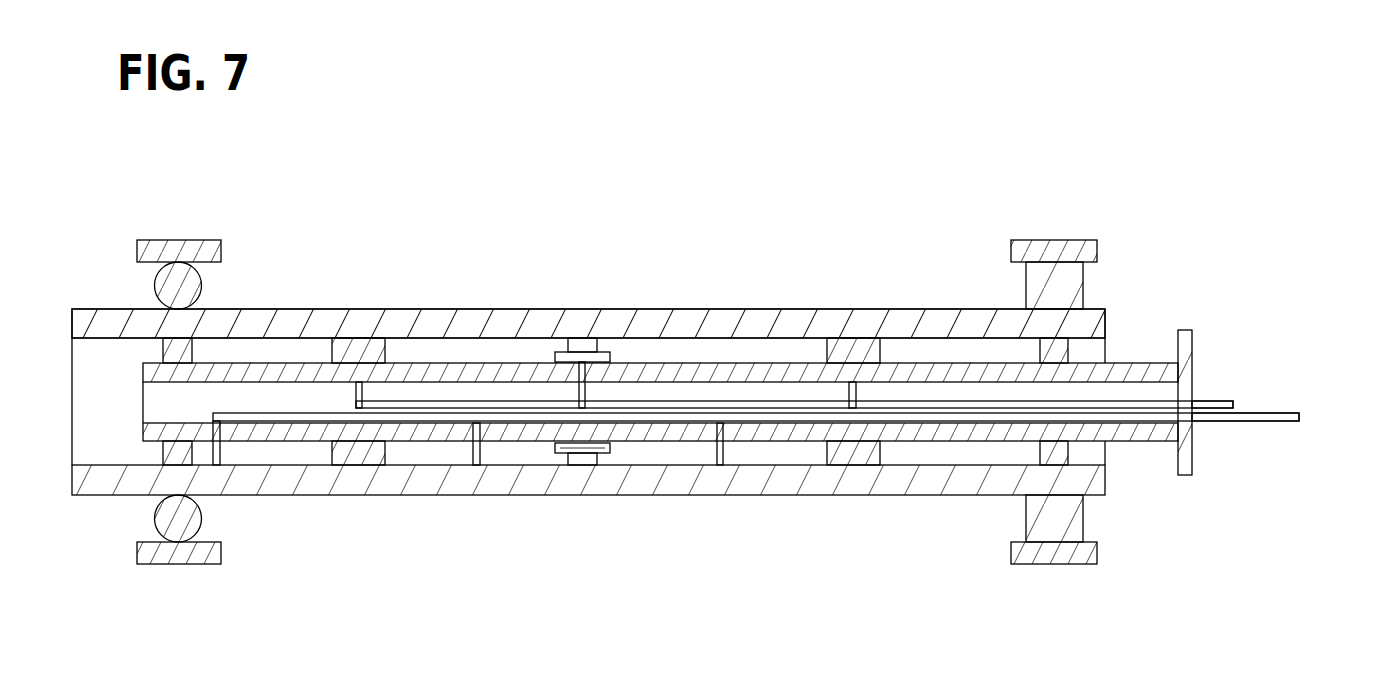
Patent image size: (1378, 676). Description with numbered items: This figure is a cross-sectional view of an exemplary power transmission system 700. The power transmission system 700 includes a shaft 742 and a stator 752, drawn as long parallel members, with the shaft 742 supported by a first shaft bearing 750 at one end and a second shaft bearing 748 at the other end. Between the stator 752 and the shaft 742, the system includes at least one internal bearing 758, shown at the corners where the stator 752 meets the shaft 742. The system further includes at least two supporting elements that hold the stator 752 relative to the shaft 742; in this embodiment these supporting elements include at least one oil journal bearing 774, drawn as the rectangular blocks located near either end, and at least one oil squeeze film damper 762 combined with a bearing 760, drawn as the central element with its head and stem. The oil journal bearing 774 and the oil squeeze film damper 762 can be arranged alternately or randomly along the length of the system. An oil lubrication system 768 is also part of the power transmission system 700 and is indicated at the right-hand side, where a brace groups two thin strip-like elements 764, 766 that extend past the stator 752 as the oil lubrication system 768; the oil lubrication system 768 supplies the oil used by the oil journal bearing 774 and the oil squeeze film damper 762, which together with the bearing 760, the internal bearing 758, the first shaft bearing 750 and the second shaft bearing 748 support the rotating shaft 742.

The power transmission system 700 is at (930, 180).
The shaft 742 is at (653, 308).
The second shaft bearing 748 is at (1083, 290).
The first shaft bearing 750 is at (203, 282).
The stator 752 is at (1122, 363).
The internal bearing 758 is at (162, 452).
The bearing 760 is at (598, 455).
The oil squeeze film damper 762 is at (608, 447).
The first strip 764 is at (1213, 400).
The second strip 766 is at (1235, 422).
The oil lubrication system 768 is at (1304, 362).
The oil journal bearing 774 is at (385, 350).